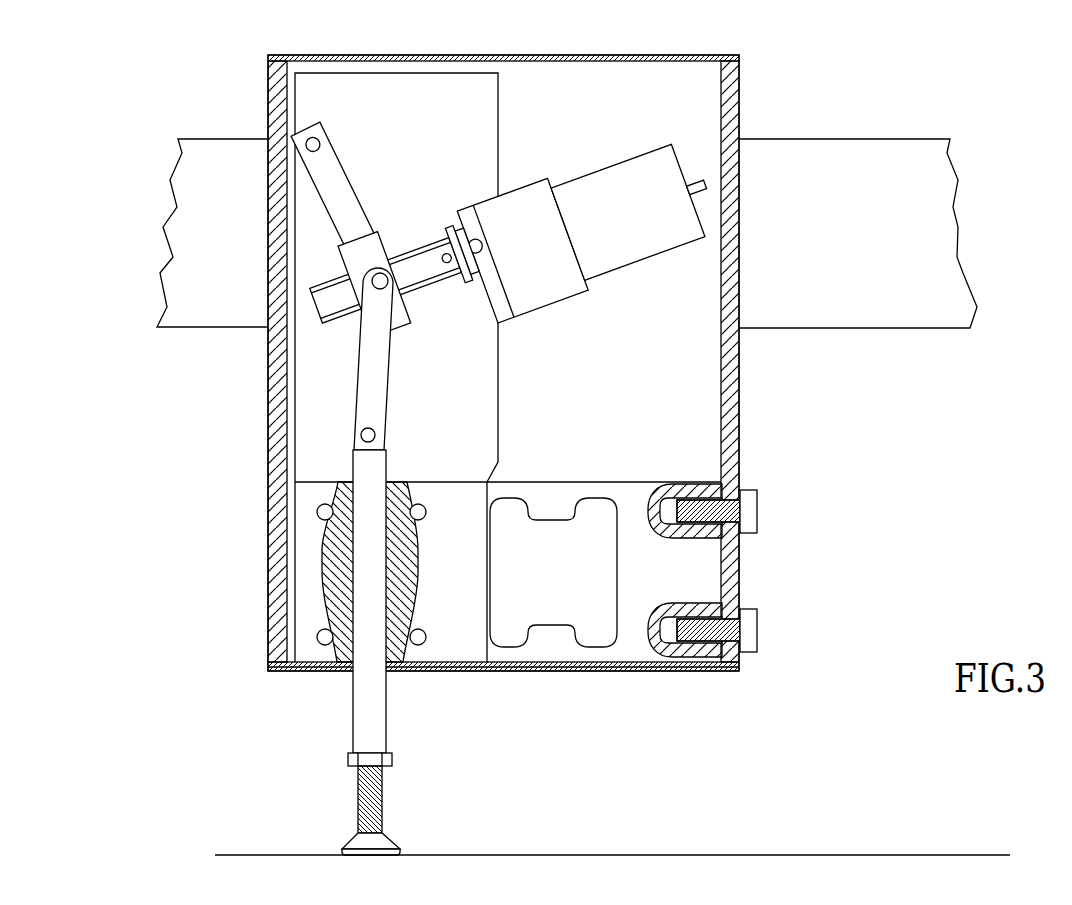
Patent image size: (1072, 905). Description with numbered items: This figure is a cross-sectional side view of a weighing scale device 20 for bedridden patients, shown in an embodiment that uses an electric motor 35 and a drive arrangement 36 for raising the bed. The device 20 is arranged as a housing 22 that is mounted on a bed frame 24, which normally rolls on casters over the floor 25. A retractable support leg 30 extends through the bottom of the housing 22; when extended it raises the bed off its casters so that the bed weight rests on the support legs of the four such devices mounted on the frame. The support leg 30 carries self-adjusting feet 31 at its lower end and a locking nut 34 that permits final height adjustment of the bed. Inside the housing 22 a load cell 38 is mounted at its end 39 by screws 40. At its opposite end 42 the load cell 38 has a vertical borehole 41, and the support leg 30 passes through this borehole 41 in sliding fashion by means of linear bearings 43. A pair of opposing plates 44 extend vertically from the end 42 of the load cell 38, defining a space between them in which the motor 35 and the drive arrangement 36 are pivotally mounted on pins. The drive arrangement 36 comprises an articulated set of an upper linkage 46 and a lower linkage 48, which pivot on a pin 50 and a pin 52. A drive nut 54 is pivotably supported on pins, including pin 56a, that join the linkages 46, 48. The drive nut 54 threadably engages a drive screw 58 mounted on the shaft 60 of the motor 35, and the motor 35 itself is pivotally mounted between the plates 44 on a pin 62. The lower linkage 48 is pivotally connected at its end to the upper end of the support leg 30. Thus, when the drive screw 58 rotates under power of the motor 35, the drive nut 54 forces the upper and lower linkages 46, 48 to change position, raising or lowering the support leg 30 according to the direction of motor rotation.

The weighing scale device 20 is at (258, 75).
The housing 22 is at (704, 668).
The bed frame 24 is at (803, 134).
The floor 25 is at (752, 852).
The support leg 30 is at (352, 690).
The self-adjusting feet 31 is at (395, 842).
The locking nut 34 is at (396, 760).
The electric motor 35 is at (632, 268).
The drive arrangement 36 is at (388, 212).
The load cell 38 is at (596, 458).
The end of load cell 39 is at (712, 565).
The screws 40 is at (750, 487).
The borehole 41 is at (330, 580).
The opposite end of load cell 42 is at (302, 536).
The linear bearings 43 is at (333, 620).
The opposing plates 44 is at (270, 438).
The upper linkage 46 is at (356, 160).
The lower linkage 48 is at (384, 390).
The pin 50 is at (320, 132).
The pin 52 is at (378, 436).
The drive nut 54 is at (396, 322).
The pin 56a is at (372, 300).
The drive screw 58 is at (440, 284).
The shaft 60 is at (442, 228).
The pin 62 is at (507, 224).